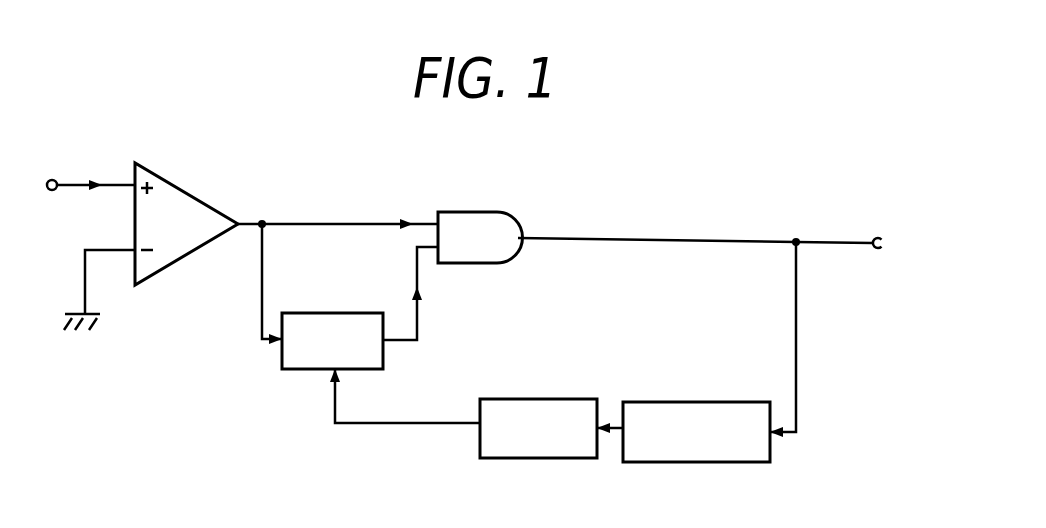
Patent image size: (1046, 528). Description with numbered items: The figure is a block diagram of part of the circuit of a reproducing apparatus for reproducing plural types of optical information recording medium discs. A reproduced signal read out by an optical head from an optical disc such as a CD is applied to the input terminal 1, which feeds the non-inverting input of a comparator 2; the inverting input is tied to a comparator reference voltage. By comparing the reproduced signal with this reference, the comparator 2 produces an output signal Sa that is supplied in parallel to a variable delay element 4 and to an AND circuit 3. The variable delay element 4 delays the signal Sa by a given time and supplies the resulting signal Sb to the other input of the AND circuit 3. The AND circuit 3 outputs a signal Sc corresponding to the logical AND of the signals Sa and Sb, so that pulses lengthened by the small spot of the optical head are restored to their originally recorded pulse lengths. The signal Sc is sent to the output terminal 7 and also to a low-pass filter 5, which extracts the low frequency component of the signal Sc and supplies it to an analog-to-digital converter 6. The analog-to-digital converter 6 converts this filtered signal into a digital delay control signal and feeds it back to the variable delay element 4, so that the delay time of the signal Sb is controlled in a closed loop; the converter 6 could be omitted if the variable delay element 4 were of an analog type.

The input terminal 1 is at (52, 180).
The comparator 2 is at (205, 204).
The AND circuit 3 is at (455, 212).
The variable delay element 4 is at (313, 313).
The low-pass filter 5 is at (752, 402).
The analog-to-digital converter 6 is at (583, 399).
The output terminal 7 is at (887, 210).
The output signal of the comparator Sa is at (303, 212).
The delayed signal Sb is at (438, 299).
The output signal of the AND circuit Sc is at (668, 226).